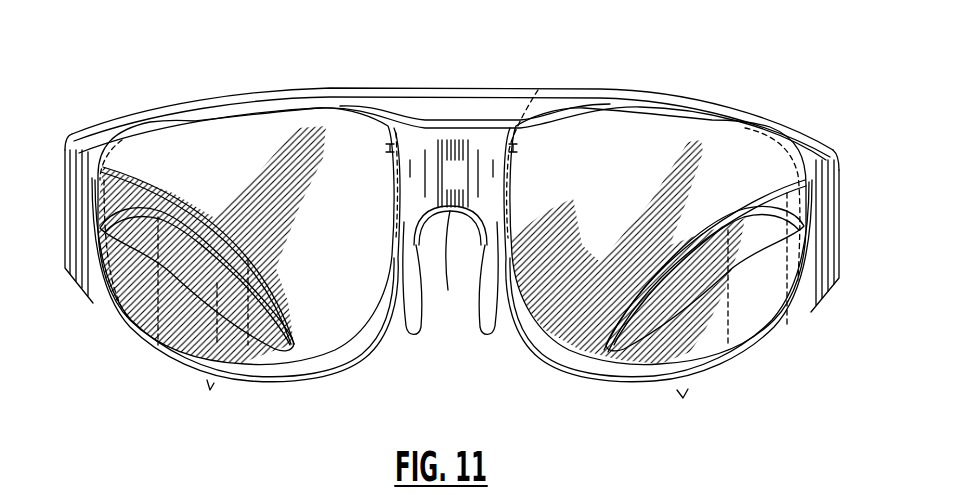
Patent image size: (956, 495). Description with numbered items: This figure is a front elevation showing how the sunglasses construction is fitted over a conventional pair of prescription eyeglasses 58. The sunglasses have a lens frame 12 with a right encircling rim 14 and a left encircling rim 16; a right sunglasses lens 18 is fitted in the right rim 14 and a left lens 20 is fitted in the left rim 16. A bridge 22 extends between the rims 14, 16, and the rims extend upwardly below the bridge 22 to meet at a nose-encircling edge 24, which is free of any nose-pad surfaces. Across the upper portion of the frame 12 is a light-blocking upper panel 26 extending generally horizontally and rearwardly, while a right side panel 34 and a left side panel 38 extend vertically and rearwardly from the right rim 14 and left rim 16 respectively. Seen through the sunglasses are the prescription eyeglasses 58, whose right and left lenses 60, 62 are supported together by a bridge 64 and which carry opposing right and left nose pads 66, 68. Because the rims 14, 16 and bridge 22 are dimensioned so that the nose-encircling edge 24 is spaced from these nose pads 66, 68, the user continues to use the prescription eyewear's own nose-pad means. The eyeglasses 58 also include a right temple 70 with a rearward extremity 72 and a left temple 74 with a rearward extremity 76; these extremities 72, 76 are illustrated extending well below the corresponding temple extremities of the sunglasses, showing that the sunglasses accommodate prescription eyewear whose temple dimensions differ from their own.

The lens frame 12 is at (813, 158).
The right encircling rim 14 is at (154, 342).
The left encircling rim 16 is at (574, 364).
The right sunglasses lens 18 is at (341, 236).
The left lens 20 is at (606, 240).
The bridge 22 is at (468, 185).
The nose-encircling edge 24 is at (450, 261).
The light-blocking upper panel 26 is at (463, 88).
The right side panel 34 is at (63, 193).
The left side panel 38 is at (840, 225).
The pair of prescription eyeglasses 58 is at (122, 140).
The right lens 60 is at (260, 130).
The left lens 62 is at (679, 122).
The bridge 64 is at (538, 90).
The right nose pad 66 is at (410, 278).
The left nose pad 68 is at (487, 279).
The right temple 70 is at (123, 343).
The rearward extremity 72 is at (209, 380).
The left temple 74 is at (729, 362).
The rearward extremity 76 is at (683, 390).